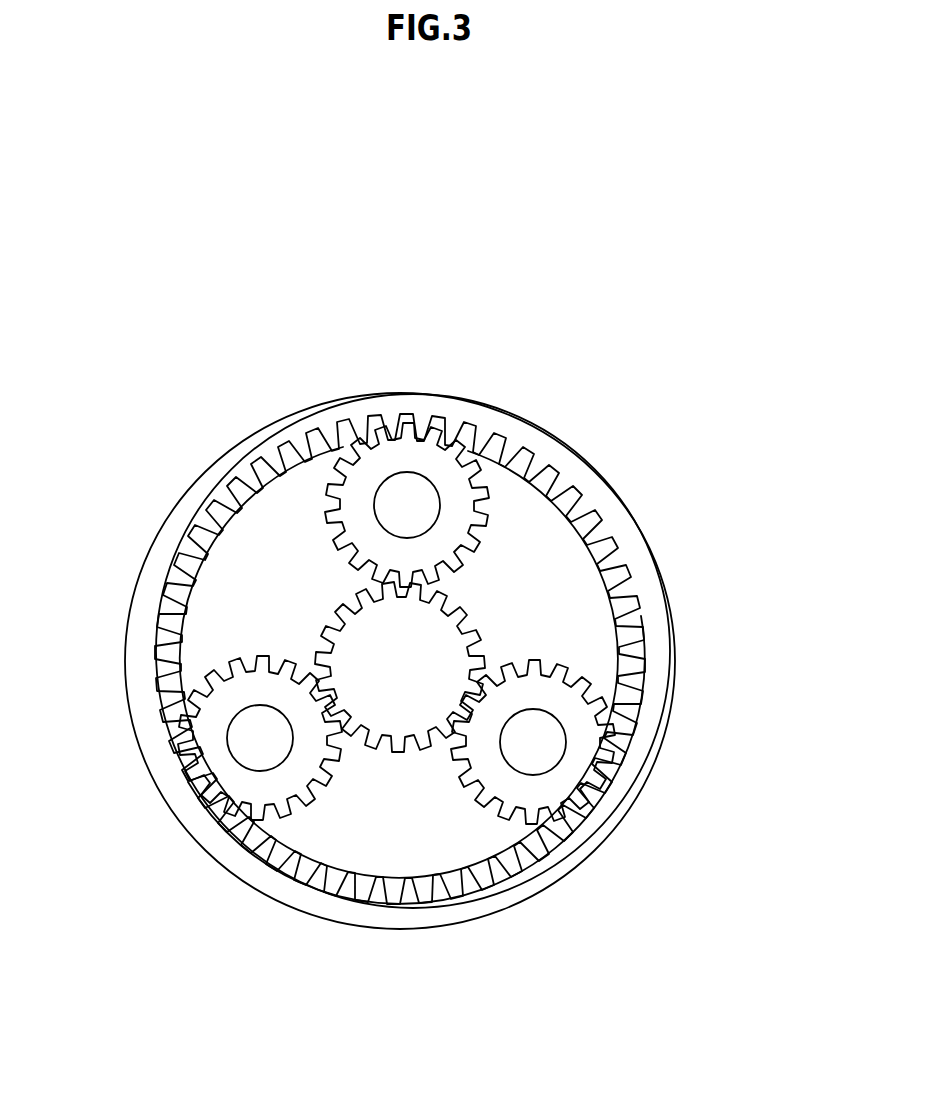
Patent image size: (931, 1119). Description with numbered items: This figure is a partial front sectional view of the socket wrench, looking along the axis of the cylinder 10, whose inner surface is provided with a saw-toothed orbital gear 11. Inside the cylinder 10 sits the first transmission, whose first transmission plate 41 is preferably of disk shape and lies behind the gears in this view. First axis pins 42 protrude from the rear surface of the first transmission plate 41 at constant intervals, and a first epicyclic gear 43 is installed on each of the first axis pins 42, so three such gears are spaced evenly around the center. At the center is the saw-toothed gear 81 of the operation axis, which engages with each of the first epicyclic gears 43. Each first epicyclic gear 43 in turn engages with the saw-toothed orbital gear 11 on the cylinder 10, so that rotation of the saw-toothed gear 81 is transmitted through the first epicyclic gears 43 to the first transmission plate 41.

The cylinder 10 is at (622, 851).
The saw-toothed orbital gear 11 is at (200, 578).
The first transmission plate 41 is at (597, 510).
The first axis pins 42 is at (412, 493).
The first epicyclic gears 43 is at (507, 518).
The saw-toothed gear 81 is at (396, 708).